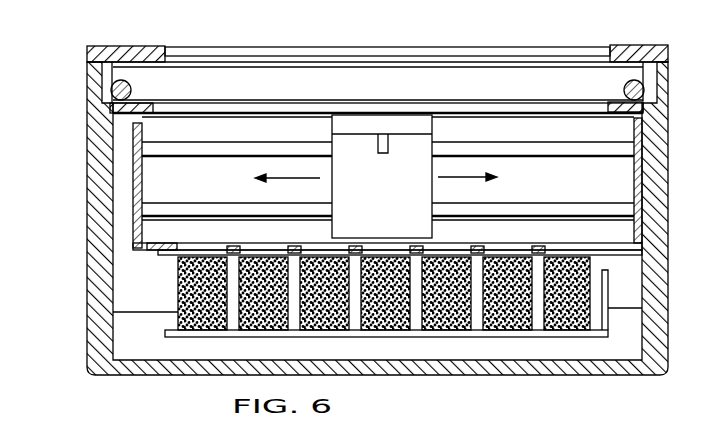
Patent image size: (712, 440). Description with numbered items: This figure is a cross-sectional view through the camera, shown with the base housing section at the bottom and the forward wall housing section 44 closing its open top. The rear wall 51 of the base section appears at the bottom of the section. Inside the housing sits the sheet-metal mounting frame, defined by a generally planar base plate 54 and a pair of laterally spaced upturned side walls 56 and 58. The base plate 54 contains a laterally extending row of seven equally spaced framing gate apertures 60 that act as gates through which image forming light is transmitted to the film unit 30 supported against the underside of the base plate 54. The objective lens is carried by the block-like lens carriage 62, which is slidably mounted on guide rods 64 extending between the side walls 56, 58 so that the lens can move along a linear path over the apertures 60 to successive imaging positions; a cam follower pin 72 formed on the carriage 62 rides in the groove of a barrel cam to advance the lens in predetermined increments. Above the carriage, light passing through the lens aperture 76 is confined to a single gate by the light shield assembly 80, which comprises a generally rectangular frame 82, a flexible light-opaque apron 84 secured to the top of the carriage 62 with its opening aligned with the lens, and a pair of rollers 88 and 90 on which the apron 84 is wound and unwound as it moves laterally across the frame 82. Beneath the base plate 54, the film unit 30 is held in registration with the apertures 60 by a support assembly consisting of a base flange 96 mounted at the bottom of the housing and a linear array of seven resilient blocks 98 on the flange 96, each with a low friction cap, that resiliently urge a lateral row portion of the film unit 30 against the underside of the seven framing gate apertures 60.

The film unit 30 is at (613, 253).
The forward wall housing section 44 is at (634, 46).
The rear wall 51 is at (403, 374).
The base plate 54 is at (146, 251).
The side wall 56 is at (637, 172).
The side wall 58 is at (123, 152).
The framing gate aperture 60 is at (266, 246).
The lens carriage 62 is at (422, 195).
The guide rod 64 is at (173, 150).
The cam follower pin 72 is at (383, 154).
The lens aperture 76 is at (216, 50).
The light shield assembly 80 is at (433, 100).
The frame 82 is at (137, 106).
The apron 84 is at (250, 117).
The roller 88 is at (626, 83).
The roller 90 is at (131, 86).
The base flange 96 is at (483, 338).
The resilient block 98 is at (260, 315).